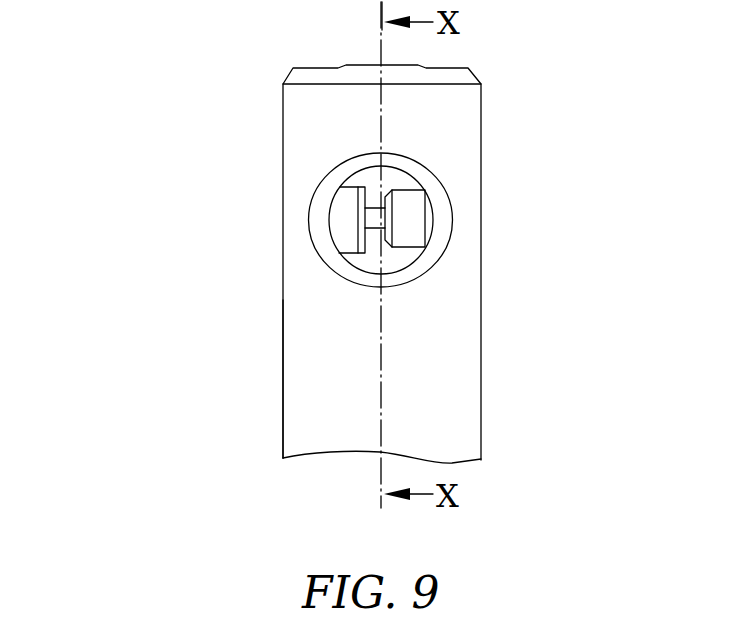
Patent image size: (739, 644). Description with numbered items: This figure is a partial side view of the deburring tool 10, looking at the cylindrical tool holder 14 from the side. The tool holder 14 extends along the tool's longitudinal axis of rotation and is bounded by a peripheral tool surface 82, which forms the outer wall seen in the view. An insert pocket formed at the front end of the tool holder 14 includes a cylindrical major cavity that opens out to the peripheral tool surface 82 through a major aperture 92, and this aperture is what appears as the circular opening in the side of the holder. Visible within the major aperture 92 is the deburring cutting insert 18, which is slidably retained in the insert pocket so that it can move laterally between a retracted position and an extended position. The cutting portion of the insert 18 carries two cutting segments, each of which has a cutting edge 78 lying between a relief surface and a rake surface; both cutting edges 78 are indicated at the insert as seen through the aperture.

The deburring tool 10 is at (158, 58).
The tool holder 14 is at (490, 102).
The deburring cutting insert 18 is at (340, 215).
The cutting edge 78 is at (388, 167).
The peripheral tool surface 82 is at (328, 372).
The major aperture 92 is at (322, 250).